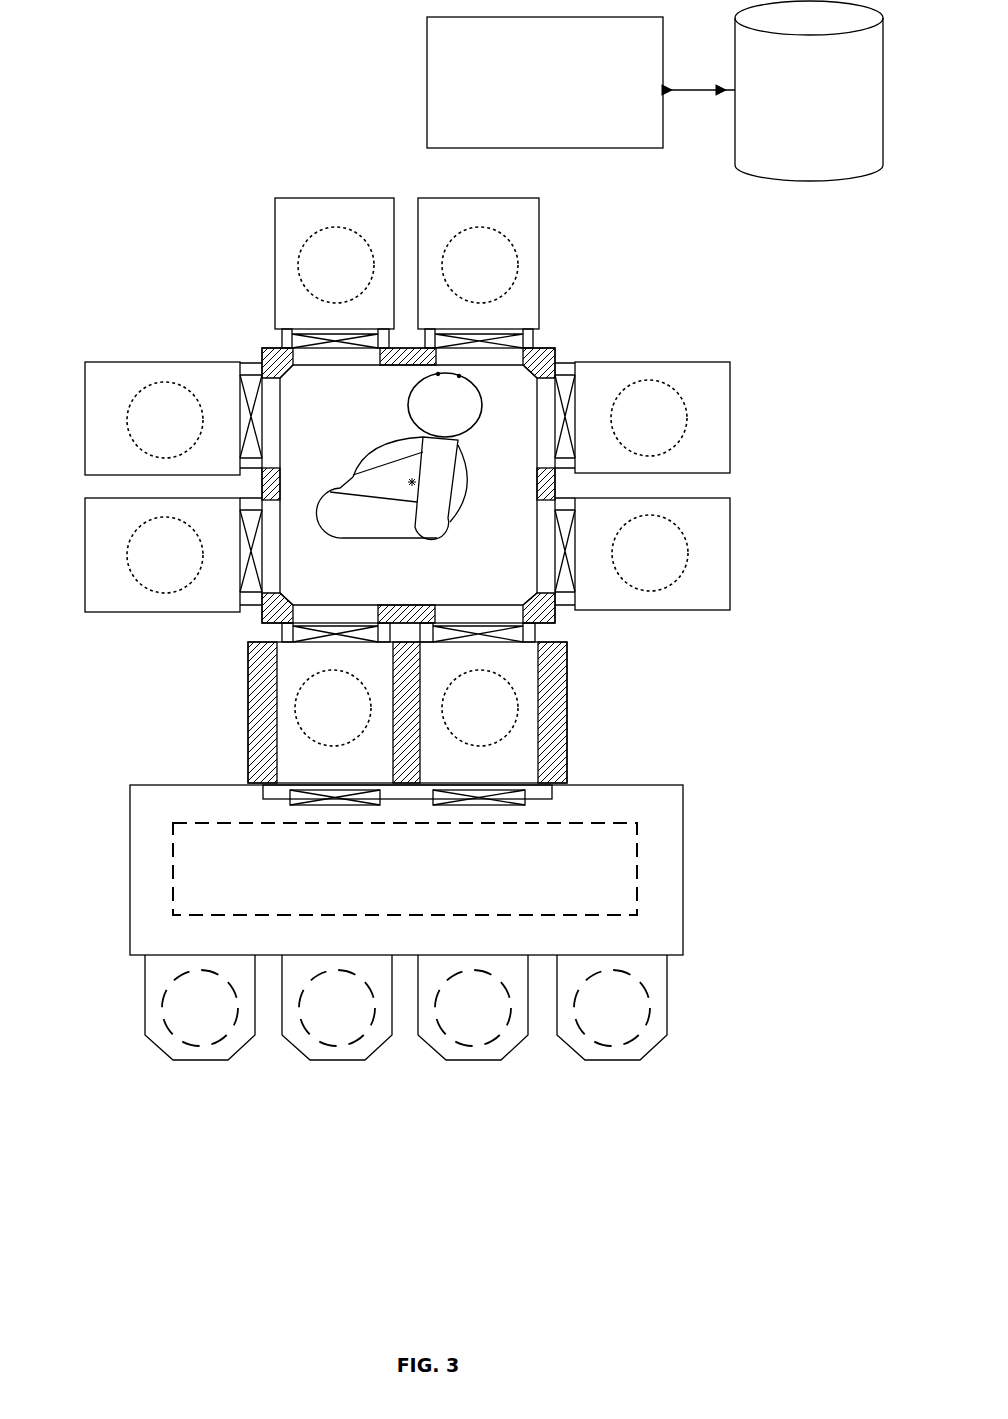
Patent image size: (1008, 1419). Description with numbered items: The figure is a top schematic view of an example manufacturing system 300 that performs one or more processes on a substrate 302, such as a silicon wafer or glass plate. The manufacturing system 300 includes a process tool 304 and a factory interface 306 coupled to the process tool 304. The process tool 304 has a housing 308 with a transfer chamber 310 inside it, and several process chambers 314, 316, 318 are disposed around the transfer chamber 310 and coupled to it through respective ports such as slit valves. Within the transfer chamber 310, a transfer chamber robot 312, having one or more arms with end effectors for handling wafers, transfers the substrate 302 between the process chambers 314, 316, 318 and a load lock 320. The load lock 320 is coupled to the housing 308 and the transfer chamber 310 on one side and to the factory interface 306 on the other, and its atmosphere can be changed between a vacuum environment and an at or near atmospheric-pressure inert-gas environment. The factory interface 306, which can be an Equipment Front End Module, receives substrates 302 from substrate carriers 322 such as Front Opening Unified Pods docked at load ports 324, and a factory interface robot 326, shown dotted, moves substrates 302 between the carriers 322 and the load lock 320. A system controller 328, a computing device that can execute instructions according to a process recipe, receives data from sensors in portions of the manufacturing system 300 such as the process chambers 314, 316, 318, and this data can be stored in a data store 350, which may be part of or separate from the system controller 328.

The manufacturing system 300 is at (173, 235).
The substrate 302 is at (445, 405).
The process tool 304 is at (468, 451).
The factory interface 306 is at (403, 870).
The housing 308 is at (560, 621).
The transfer chamber 310 is at (408, 485).
The transfer chamber robot 312 is at (392, 436).
The process chamber 314 is at (652, 486).
The process chamber 316 is at (407, 263).
The process chamber 318 is at (162, 487).
The load lock 320 is at (245, 694).
The substrate carrier 322 is at (178, 1062).
The load port 324 is at (406, 1035).
The factory interface robot 326 is at (637, 860).
The system controller 328 is at (545, 82).
The data store 350 is at (809, 91).